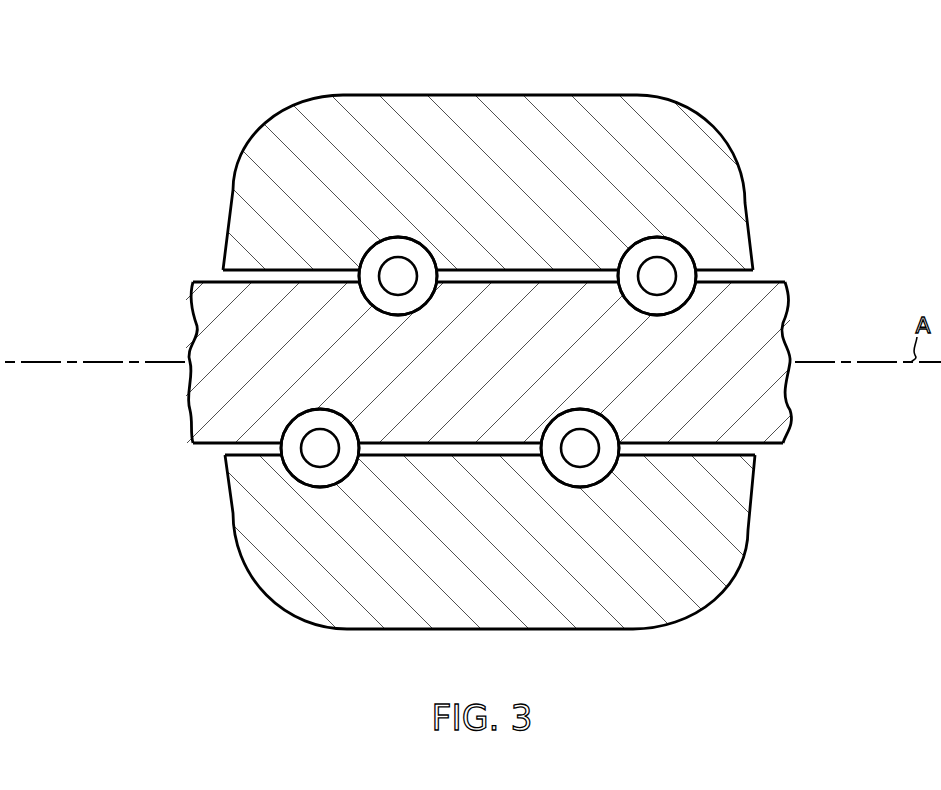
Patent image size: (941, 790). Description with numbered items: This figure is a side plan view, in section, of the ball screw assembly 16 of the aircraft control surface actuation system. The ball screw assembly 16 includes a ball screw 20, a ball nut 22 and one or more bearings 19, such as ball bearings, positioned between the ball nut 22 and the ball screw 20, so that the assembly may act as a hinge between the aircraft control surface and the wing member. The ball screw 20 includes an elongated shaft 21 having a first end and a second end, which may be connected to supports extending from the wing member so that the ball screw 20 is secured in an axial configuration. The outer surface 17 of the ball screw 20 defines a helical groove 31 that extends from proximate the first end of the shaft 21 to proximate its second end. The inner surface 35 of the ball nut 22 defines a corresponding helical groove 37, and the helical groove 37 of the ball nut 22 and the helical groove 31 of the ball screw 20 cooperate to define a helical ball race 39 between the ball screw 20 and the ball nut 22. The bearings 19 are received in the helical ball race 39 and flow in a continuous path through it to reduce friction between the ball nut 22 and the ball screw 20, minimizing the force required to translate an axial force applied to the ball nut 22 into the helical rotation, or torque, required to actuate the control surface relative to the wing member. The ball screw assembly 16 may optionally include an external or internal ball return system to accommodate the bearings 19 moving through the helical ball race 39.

The ball screw assembly 16 is at (470, 335).
The outer surface 17 is at (777, 281).
The bearings 19 is at (394, 274).
The ball screw 20 is at (777, 442).
The shaft 21 is at (204, 303).
The ball nut 22 is at (494, 95).
The helical groove 31 is at (411, 309).
The inner surface 35 is at (524, 272).
The helical groove 37 is at (407, 243).
The helical ball race 39 is at (407, 228).